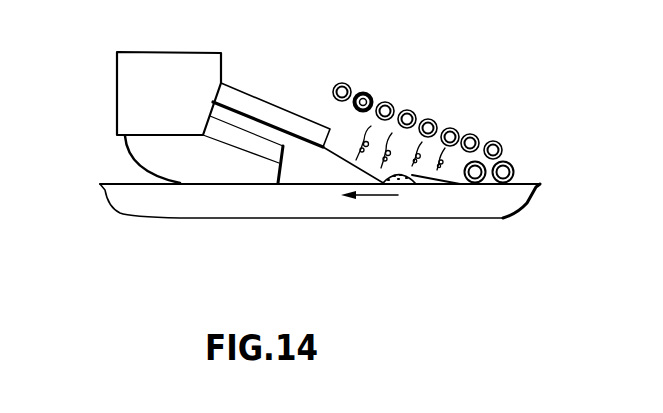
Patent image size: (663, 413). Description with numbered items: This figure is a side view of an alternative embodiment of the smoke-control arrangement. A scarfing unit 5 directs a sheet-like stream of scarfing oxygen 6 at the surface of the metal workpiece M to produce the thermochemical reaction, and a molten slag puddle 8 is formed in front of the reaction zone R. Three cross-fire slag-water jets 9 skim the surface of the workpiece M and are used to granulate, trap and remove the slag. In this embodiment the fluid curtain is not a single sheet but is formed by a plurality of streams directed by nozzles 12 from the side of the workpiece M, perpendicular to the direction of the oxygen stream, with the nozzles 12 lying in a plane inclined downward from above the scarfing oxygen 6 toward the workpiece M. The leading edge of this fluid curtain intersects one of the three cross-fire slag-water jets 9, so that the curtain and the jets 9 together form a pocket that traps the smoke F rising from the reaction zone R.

The scarfing unit 5 is at (112, 104).
The scarfing oxygen 6 is at (330, 162).
The molten slag puddle 8 is at (421, 183).
The cross-fire slag-water jets 9 is at (530, 143).
The nozzles 12 is at (413, 112).
The smoke F is at (394, 144).
The reaction zone R is at (394, 181).
The metal workpiece M is at (177, 212).